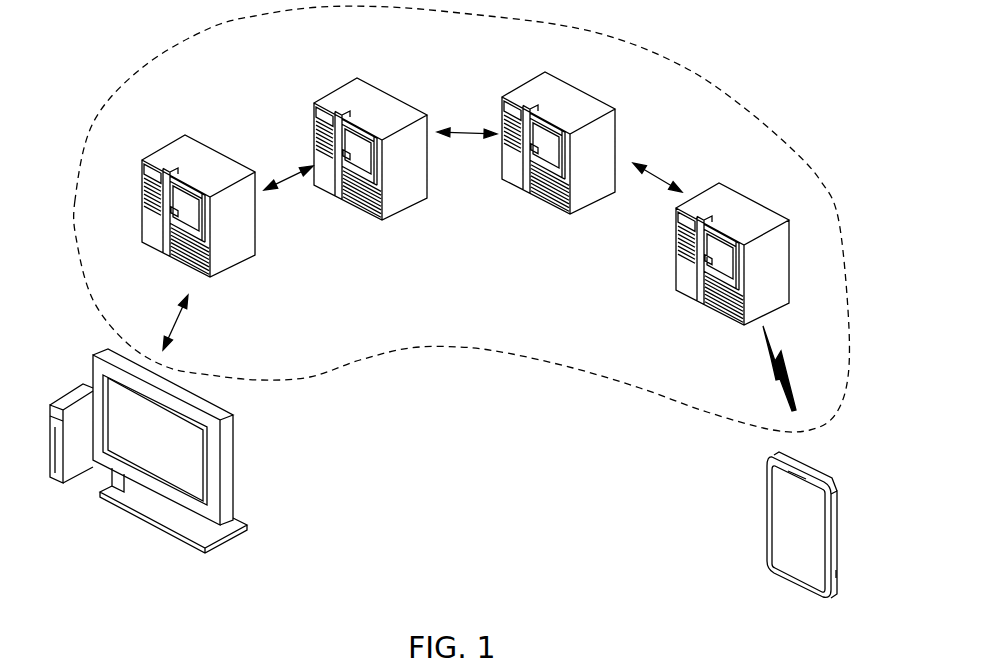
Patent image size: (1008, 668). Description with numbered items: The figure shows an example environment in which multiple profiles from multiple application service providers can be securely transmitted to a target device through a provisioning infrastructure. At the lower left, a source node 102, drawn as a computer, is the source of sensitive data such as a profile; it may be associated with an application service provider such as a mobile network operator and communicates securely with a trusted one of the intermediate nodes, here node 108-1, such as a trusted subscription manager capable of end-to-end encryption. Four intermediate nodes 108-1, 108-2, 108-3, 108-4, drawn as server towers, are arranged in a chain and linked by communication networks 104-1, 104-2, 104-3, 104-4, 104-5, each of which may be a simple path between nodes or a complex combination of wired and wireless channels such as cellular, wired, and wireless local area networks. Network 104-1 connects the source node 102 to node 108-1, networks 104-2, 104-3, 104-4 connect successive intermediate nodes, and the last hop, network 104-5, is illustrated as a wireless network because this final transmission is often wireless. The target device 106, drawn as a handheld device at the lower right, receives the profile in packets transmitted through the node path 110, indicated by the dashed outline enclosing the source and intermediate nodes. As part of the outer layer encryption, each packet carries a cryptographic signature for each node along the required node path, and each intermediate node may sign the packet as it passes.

The source node 102 is at (229, 413).
The network 104-1 is at (185, 318).
The network 104-2 is at (297, 190).
The network 104-3 is at (467, 143).
The network 104-4 is at (652, 184).
The network 104-5 is at (768, 362).
The target device 106 is at (820, 474).
The intermediate node 108-1 is at (215, 126).
The intermediate node 108-2 is at (372, 80).
The intermediate node 108-3 is at (560, 75).
The intermediate node 108-4 is at (730, 185).
The node path 110 is at (570, 27).